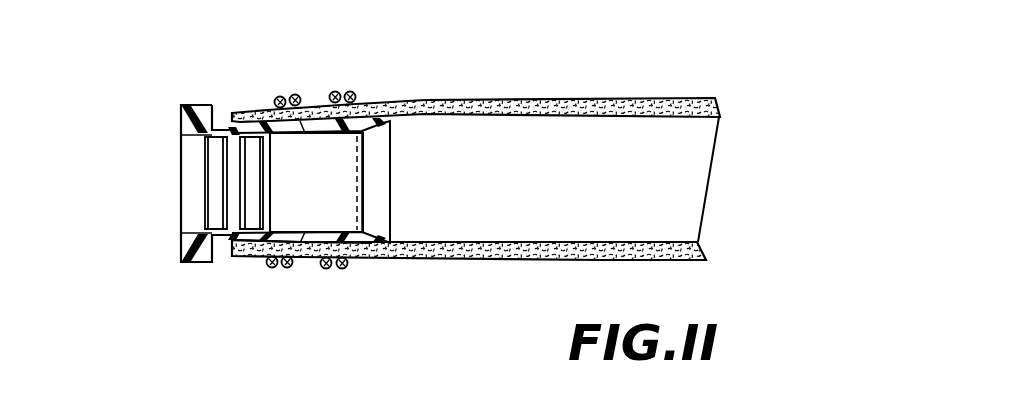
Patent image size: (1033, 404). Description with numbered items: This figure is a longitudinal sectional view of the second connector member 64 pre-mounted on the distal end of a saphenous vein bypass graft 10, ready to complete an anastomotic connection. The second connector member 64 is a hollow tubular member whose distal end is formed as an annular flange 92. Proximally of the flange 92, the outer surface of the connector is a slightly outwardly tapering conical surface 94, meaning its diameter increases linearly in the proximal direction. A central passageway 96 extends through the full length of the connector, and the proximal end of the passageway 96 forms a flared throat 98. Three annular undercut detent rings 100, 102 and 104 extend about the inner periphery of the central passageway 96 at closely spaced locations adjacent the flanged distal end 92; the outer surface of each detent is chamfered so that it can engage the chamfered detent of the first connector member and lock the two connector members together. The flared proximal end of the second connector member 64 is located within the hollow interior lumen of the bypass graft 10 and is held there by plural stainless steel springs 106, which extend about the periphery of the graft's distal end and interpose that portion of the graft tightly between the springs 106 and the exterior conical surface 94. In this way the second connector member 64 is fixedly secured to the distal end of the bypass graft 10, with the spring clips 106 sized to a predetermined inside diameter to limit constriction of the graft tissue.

The bypass graft 10 is at (563, 98).
The second connector member 64 is at (206, 106).
The annular flange 92 is at (190, 264).
The conical surface 94 is at (303, 264).
The central passageway 96 is at (181, 205).
The flared throat 98 is at (393, 230).
The annular undercut detent ring 100 is at (181, 148).
The annular undercut detent ring 102 is at (223, 144).
The annular undercut detent ring 104 is at (272, 158).
The stainless steel springs 106 is at (343, 92).